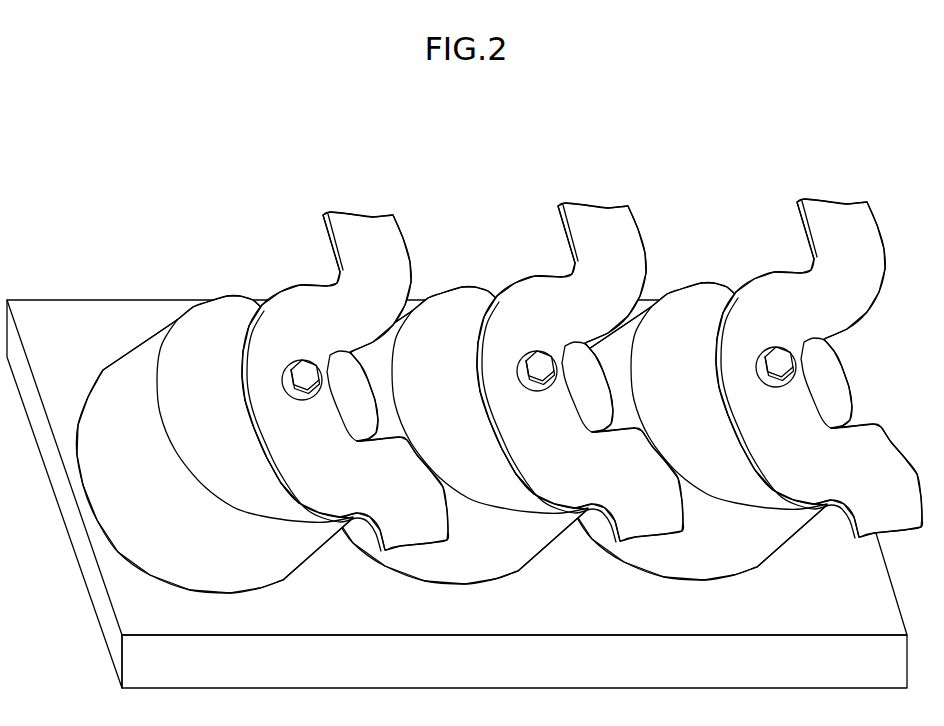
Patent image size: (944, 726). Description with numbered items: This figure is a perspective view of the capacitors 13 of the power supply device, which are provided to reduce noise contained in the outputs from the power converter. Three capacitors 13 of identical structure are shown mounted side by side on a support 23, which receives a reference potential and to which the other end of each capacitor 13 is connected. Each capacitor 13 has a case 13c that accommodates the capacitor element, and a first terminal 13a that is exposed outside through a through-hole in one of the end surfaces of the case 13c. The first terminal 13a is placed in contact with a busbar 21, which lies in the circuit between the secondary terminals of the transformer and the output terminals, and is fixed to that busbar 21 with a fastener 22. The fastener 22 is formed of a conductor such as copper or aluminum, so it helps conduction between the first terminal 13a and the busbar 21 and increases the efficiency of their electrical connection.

The capacitor 13 is at (214, 411).
The first terminal 13a is at (233, 347).
The case 13c is at (181, 345).
The busbar 21 is at (363, 222).
The fastener 22 is at (305, 360).
The support 23 is at (53, 323).